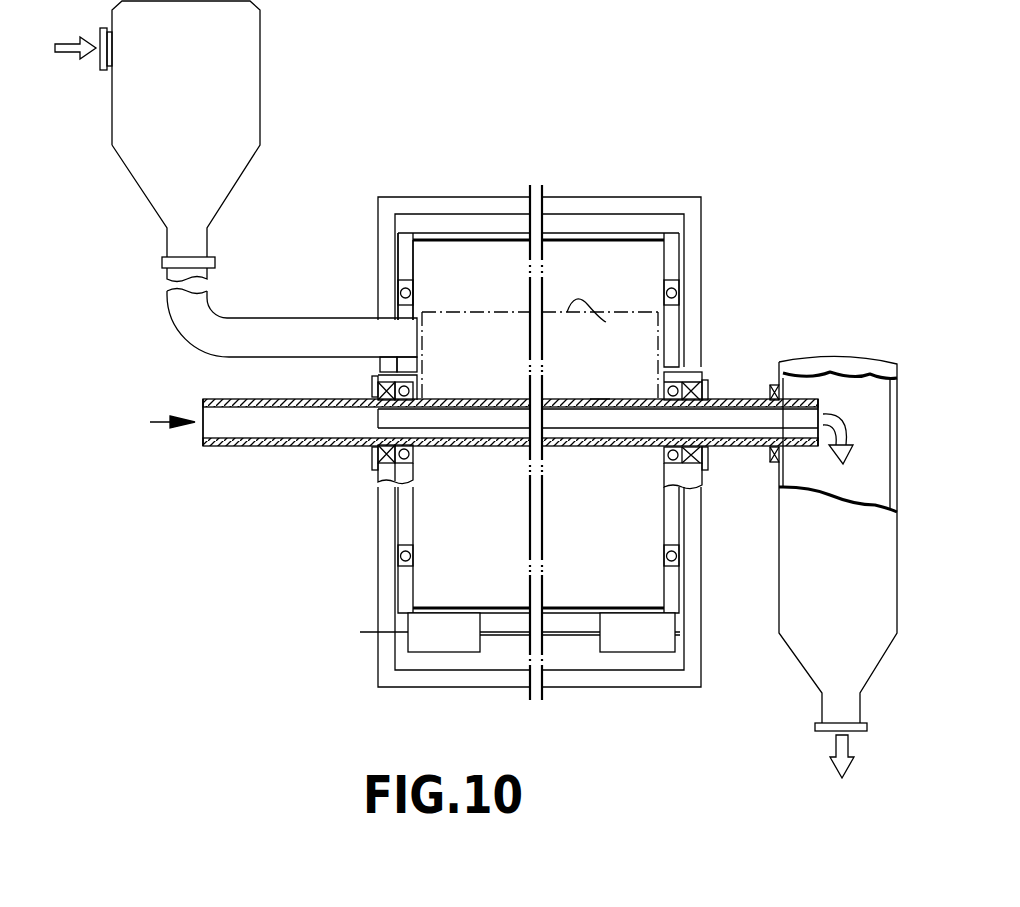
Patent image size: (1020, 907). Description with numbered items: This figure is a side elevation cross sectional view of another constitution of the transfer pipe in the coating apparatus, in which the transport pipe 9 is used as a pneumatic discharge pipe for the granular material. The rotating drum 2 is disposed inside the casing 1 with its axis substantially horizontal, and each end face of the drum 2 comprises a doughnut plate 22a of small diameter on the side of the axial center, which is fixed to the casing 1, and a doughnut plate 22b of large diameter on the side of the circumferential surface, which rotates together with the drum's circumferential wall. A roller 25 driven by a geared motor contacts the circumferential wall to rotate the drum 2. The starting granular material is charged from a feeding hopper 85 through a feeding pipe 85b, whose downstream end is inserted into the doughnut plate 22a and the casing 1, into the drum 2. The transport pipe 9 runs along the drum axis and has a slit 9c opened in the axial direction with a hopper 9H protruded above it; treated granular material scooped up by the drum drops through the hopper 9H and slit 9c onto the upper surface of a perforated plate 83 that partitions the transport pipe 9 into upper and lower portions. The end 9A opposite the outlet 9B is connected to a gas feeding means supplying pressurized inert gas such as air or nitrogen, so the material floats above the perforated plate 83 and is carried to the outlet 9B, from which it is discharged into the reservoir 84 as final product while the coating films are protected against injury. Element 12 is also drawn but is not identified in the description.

The casing 1 is at (700, 212).
The rotating drum 2 is at (672, 260).
The transport pipe 9 is at (280, 447).
The end 9A is at (203, 415).
The outlet 9B is at (818, 410).
The hopper 9H is at (658, 323).
The slit 9c is at (600, 400).
The feed tube 12 is at (353, 333).
The doughnut plate of small diameter 22a is at (398, 303).
The doughnut plate of large diameter 22b is at (400, 240).
The roller 25 is at (450, 640).
The perforated plate 83 is at (478, 432).
The reservoir 84 is at (779, 568).
The feeding hopper 85 is at (252, 52).
The feeding pipe 85b is at (283, 327).